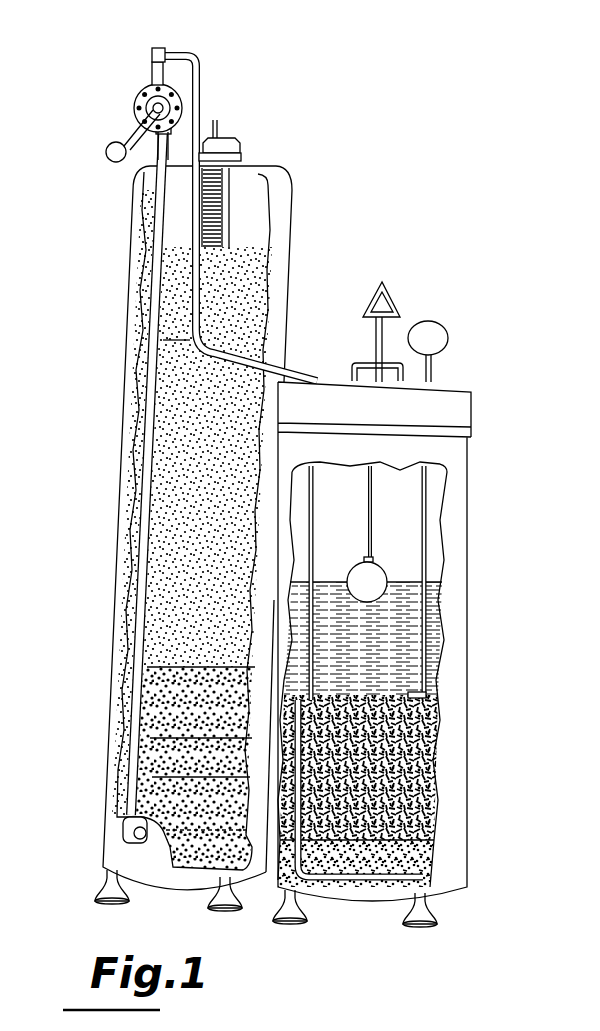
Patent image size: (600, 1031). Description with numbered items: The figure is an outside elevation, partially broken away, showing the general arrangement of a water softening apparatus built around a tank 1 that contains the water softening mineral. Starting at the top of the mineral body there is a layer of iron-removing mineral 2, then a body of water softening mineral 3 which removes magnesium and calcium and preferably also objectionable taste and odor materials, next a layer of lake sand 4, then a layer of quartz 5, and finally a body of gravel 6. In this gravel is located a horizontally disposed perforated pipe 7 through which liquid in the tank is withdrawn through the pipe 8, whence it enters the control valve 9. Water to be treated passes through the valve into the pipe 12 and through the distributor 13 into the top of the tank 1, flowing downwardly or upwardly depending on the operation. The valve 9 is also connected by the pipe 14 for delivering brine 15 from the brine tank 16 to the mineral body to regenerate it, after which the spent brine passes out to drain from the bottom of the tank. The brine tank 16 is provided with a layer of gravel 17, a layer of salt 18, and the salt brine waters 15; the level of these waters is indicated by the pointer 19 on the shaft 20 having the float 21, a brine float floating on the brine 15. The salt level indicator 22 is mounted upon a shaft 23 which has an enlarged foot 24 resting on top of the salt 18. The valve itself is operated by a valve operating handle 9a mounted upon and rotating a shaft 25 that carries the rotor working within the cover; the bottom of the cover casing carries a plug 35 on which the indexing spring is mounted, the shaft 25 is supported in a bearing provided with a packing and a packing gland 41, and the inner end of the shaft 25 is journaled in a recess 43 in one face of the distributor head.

The tank 1 is at (125, 362).
The layer of iron-removing mineral 2 is at (177, 295).
The body of water softening mineral 3 is at (183, 426).
The layer of lake sand 4 is at (163, 698).
The layer of quartz 5 is at (150, 752).
The body of gravel 6 is at (157, 793).
The horizontally disposed perforated pipe 7 is at (170, 868).
The pipe 8 is at (143, 602).
The control valve 9 is at (128, 125).
The valve operating handle 9a is at (112, 161).
The pipe 12 is at (216, 127).
The distributor 13 is at (224, 210).
The brine pipe 14 is at (194, 66).
The brine 15 is at (430, 648).
The brine tank 16 is at (467, 500).
The layer of gravel 17 is at (414, 863).
The layer of salt 18 is at (436, 790).
The pointer 19 is at (385, 300).
The shaft 20 is at (375, 343).
The float 21 is at (372, 575).
The salt level indicator 22 is at (437, 333).
The shaft 23 is at (433, 372).
The enlarged foot 24 is at (430, 690).
The shaft 25 is at (134, 92).
The plug 35 is at (156, 142).
The packing gland 41 is at (152, 80).
The recess 43 is at (159, 49).